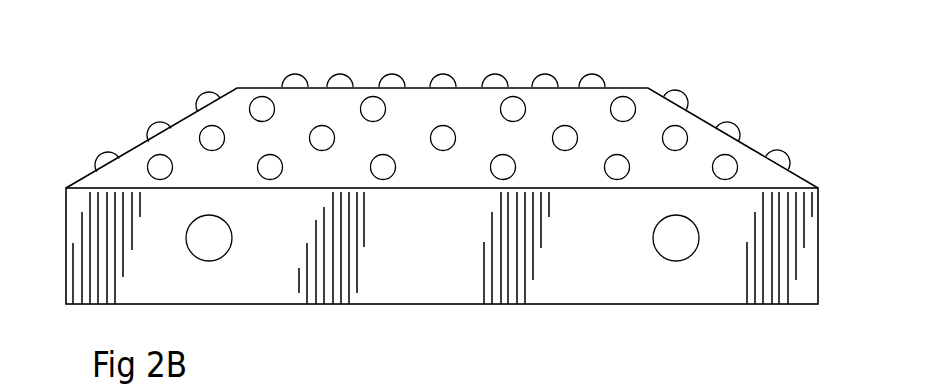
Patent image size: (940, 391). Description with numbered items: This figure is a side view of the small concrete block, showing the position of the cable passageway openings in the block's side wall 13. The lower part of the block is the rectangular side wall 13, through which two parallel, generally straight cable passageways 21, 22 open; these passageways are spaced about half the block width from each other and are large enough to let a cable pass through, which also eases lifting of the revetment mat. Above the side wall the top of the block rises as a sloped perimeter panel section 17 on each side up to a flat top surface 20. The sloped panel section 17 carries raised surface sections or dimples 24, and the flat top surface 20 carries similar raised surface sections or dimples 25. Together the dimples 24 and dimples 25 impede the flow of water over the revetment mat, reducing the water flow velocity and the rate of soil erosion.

The side wall 13 is at (770, 239).
The sloped perimeter panel section 17 is at (652, 112).
The flat top surface 20 is at (367, 87).
The cable passageway 21 is at (676, 238).
The cable passageway 22 is at (209, 238).
The raised surface sections or dimples 24 is at (160, 167).
The raised surface sections or dimples 25 is at (592, 77).